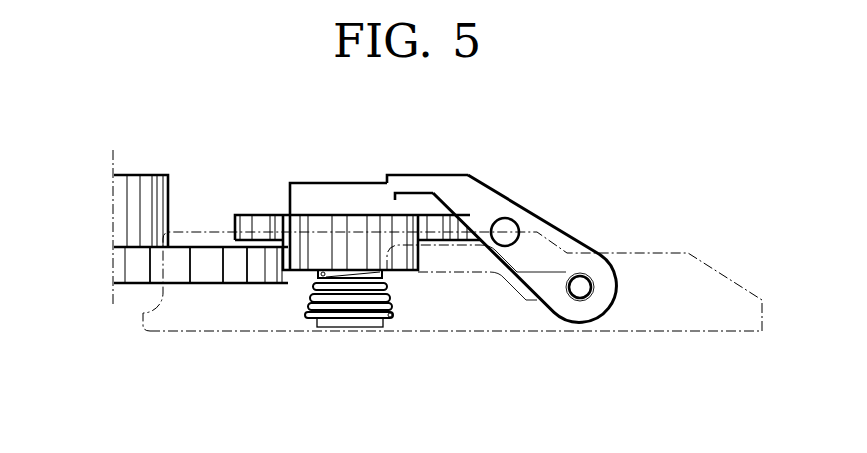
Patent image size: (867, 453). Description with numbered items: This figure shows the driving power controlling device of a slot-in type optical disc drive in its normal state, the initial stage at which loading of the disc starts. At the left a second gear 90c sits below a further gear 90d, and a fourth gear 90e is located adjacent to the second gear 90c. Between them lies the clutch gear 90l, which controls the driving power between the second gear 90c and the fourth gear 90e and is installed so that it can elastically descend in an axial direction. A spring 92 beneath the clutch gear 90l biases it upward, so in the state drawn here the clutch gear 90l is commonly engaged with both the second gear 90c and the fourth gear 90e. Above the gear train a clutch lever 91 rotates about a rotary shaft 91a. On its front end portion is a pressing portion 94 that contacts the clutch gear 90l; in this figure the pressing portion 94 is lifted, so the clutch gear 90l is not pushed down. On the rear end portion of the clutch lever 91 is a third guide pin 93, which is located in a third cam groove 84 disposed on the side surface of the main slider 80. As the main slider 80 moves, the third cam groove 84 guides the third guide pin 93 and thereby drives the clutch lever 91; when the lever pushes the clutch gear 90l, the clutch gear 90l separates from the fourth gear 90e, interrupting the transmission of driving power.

The main slider 80 is at (672, 318).
The third cam groove 84 is at (517, 300).
The second gear 90c is at (122, 268).
The upper block of holder 90d is at (122, 210).
The fourth gear 90e is at (240, 215).
The clutch gear 90l is at (327, 215).
The clutch lever 91 is at (568, 232).
The rotary shaft 91a is at (508, 222).
The spring 92 is at (393, 305).
The third guide pin 93 is at (580, 298).
The pressing portion 94 is at (385, 200).